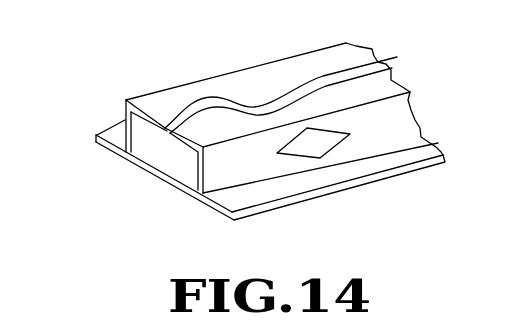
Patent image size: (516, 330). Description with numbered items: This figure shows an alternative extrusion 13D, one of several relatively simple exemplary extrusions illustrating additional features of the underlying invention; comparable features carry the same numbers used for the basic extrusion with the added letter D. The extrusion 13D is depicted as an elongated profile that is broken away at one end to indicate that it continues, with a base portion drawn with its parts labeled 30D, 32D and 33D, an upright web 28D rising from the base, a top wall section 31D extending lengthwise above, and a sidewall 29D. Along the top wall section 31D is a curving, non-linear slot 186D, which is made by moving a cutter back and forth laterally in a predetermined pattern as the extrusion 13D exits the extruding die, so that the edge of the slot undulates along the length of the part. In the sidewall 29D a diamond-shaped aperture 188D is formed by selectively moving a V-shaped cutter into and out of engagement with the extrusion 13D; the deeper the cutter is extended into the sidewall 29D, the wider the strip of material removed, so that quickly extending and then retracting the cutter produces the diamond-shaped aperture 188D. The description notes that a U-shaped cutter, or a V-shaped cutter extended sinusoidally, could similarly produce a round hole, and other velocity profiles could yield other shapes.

The extrusion 13D is at (402, 58).
The web 28D is at (131, 118).
The sidewall 29D is at (391, 116).
The base plate 30D is at (157, 176).
The top wall section 31D is at (340, 54).
The base plate front edge 32D is at (259, 211).
The base flange 33D is at (104, 148).
The curving, non-linear slot 186D is at (197, 110).
The diamond-shaped aperture 188D is at (311, 136).